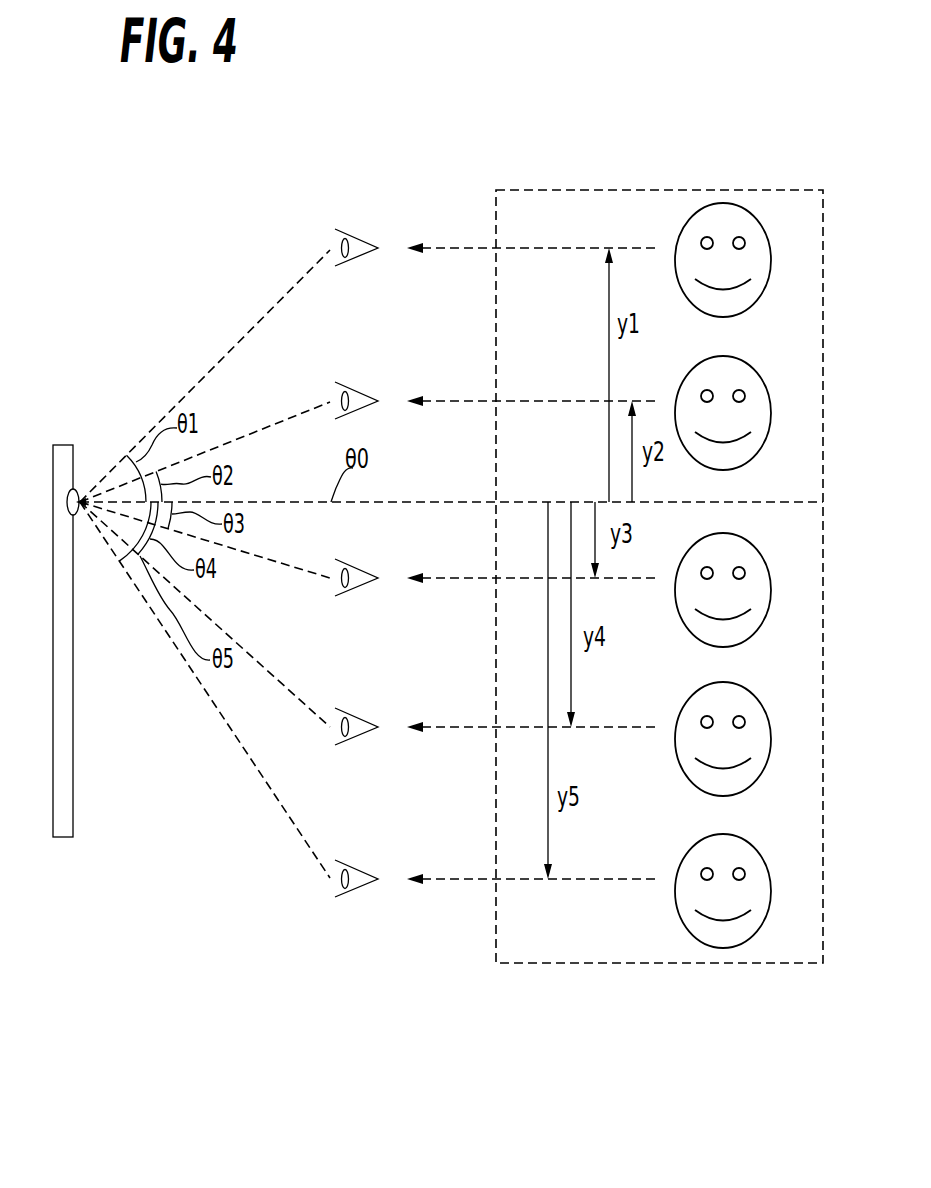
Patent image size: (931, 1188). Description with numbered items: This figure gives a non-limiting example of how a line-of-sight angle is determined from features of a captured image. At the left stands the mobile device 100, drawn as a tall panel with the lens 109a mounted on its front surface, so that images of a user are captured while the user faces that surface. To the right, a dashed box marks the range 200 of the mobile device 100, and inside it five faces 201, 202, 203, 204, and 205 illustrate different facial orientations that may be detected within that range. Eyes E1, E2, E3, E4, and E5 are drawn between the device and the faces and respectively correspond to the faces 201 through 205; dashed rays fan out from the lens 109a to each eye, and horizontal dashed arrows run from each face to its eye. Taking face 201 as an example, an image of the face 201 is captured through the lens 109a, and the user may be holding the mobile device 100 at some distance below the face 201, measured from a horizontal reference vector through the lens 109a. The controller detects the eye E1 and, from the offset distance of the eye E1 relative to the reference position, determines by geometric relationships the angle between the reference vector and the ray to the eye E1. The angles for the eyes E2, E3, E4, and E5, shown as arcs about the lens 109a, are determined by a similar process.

The mobile device 100 is at (73, 812).
The lens 109a is at (79, 490).
The range 200 is at (598, 963).
The face 201 is at (750, 307).
The face 202 is at (750, 460).
The face 203 is at (750, 637).
The face 204 is at (750, 786).
The face 205 is at (760, 928).
The eye E1 is at (355, 238).
The eye E2 is at (355, 391).
The eye E3 is at (355, 568).
The eye E4 is at (355, 717).
The eye E5 is at (355, 869).